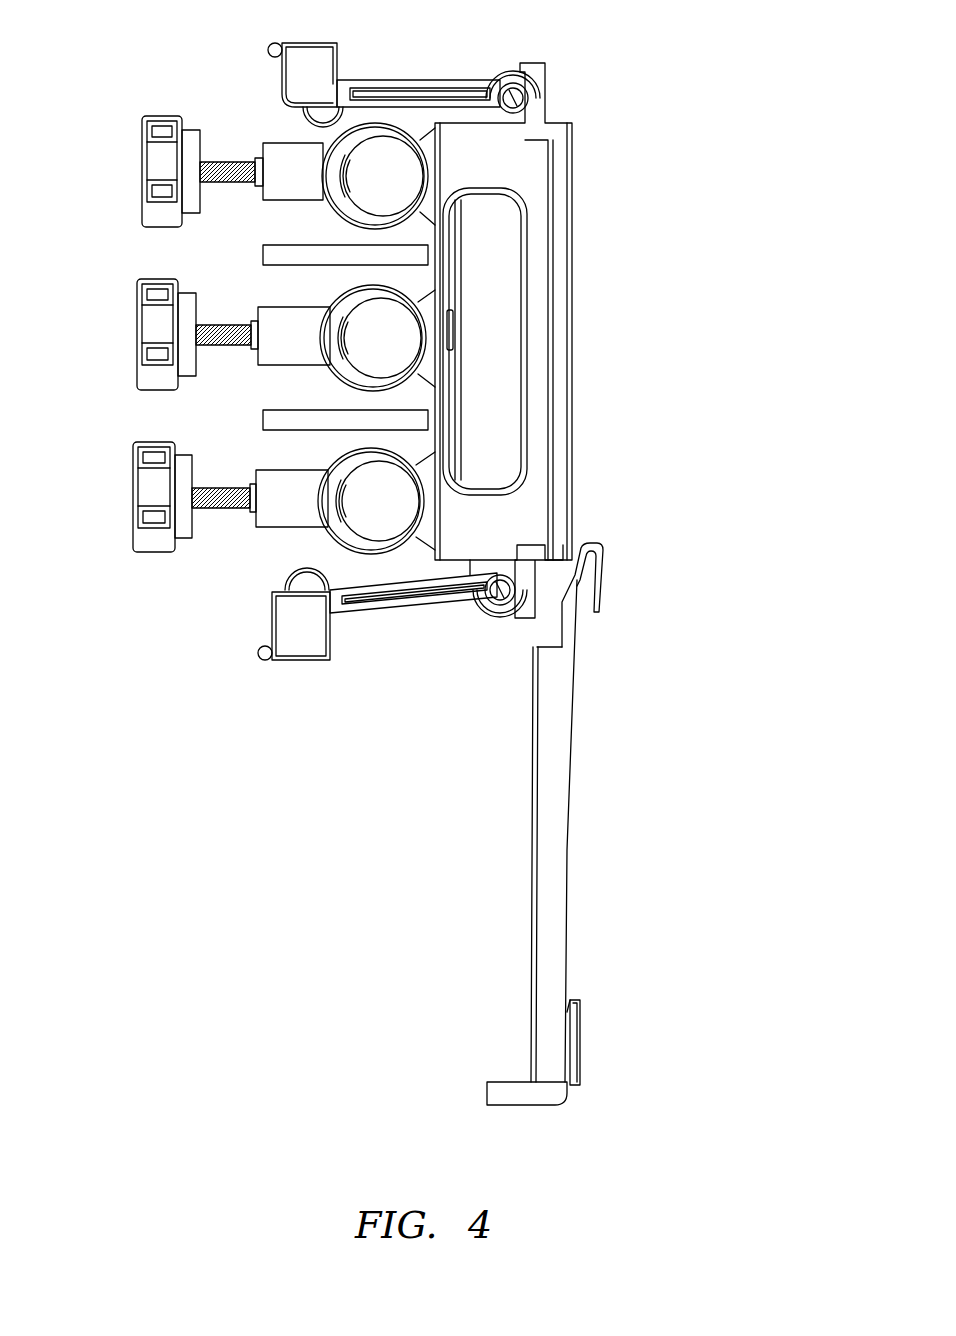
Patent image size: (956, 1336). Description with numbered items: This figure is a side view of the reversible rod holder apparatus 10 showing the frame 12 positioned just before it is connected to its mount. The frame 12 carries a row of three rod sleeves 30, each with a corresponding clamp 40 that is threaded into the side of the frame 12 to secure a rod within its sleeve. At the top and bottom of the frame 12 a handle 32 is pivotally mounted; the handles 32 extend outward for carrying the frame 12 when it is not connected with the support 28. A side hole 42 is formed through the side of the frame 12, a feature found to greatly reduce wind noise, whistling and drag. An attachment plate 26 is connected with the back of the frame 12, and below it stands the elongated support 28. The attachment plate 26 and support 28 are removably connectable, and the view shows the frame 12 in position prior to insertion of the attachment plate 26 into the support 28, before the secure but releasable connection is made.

The reversible rod holder apparatus 10 is at (727, 77).
The frame 12 is at (535, 172).
The attachment plate 26 is at (553, 478).
The support 28 is at (557, 800).
The rod sleeve 30 is at (335, 135).
The handle 32 is at (337, 80).
The clamp 40 is at (142, 172).
The side hole 42 is at (486, 309).